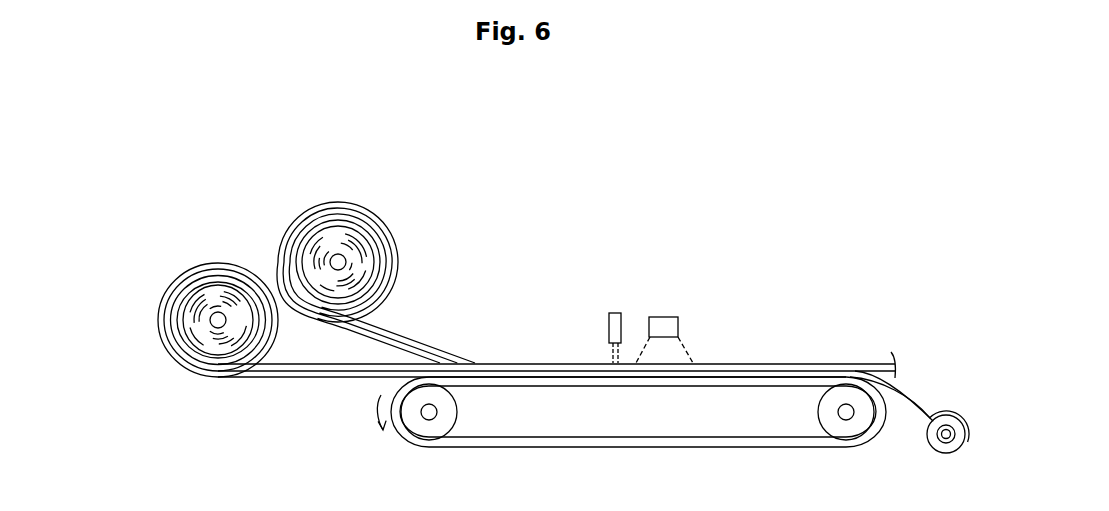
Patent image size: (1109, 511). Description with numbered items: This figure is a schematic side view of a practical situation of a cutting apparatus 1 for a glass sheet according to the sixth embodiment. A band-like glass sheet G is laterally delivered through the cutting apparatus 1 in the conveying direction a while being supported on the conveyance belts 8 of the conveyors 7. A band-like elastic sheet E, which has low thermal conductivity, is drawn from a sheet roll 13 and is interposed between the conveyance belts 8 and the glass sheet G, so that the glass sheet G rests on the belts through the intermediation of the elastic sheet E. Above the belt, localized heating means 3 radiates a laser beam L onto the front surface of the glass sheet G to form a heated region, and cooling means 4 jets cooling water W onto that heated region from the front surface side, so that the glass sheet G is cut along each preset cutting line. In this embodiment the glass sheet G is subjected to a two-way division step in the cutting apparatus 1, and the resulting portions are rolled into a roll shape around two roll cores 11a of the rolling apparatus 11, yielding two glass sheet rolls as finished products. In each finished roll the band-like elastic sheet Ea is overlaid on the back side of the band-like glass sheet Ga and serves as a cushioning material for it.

The cutting apparatus 1 is at (735, 290).
The rolling apparatus 11 is at (223, 210).
The roll core 11a is at (212, 316).
The band-like glass sheet (available portion) Ga is at (284, 365).
The band-like elastic sheet (available portion) Ea is at (371, 345).
The glass sheet G is at (853, 363).
The elastic sheet E is at (910, 394).
The conveyor 7 is at (631, 434).
The conveyance belt 8 is at (661, 384).
The conveying direction a is at (384, 424).
The cooling means 4 is at (598, 307).
The cooling water W is at (609, 347).
The localized heating means 3 is at (683, 307).
The laser beam L is at (688, 348).
The sheet roll 13 is at (958, 447).